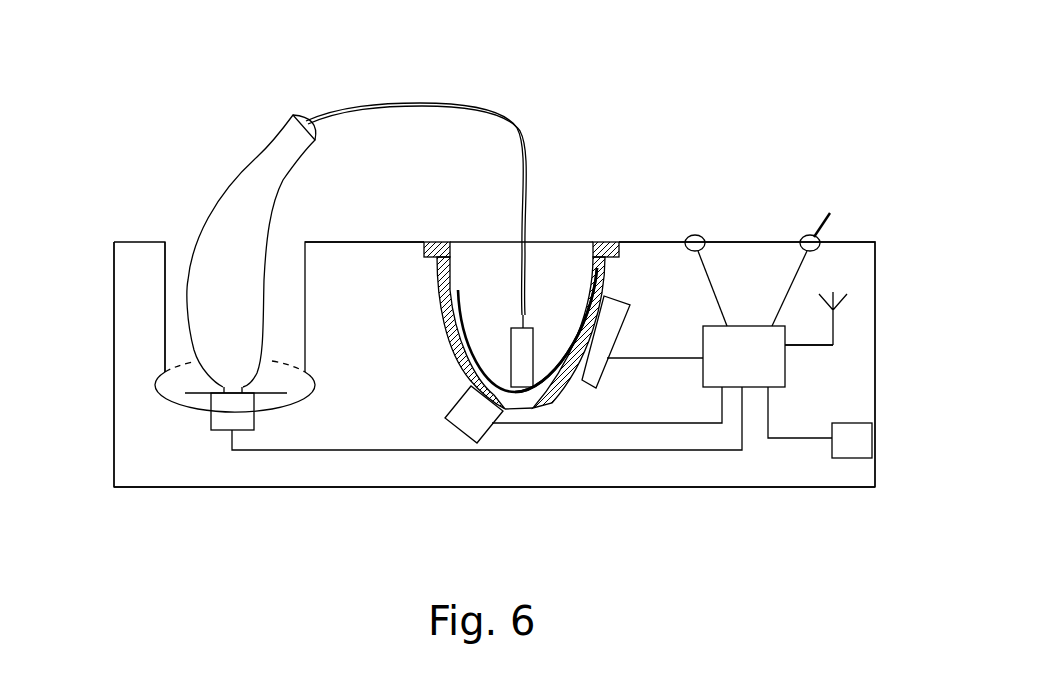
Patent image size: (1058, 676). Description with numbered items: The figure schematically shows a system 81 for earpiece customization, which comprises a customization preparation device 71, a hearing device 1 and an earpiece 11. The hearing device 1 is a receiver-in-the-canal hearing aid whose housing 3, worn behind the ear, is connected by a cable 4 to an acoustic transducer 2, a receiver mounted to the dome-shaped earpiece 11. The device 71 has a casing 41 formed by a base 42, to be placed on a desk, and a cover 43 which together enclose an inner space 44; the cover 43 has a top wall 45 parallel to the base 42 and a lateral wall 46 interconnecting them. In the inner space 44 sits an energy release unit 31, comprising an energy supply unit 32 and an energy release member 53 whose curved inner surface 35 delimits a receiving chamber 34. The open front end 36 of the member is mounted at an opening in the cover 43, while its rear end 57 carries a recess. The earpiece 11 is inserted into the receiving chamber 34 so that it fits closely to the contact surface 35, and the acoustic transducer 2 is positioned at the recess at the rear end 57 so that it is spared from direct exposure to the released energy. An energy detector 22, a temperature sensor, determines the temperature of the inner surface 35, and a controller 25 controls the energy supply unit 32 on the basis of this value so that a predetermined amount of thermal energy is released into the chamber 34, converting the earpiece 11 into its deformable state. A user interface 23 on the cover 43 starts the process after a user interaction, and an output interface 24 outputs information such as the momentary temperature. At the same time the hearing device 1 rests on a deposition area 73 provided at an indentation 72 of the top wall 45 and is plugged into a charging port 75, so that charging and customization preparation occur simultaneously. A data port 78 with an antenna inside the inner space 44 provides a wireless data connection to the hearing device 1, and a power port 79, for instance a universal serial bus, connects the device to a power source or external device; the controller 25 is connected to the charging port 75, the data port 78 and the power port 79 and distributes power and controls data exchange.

The hearing device 1 is at (437, 72).
The acoustic transducer 2 is at (520, 387).
The housing 3 is at (230, 167).
The cable 4 is at (487, 120).
The earpiece 11 is at (588, 312).
The energy detector 22 is at (463, 425).
The user interface 23 is at (812, 235).
The output interface 24 is at (697, 235).
The controller 25 is at (770, 373).
The energy release unit 31 is at (448, 318).
The energy supply unit 32 is at (604, 312).
The receiving chamber 34 is at (540, 255).
The inner surface 35 is at (452, 273).
The front end 36 is at (438, 242).
The casing 41 is at (876, 330).
The base 42 is at (752, 488).
The cover 43 is at (862, 242).
The inner space 44 is at (860, 262).
The top wall 45 is at (401, 242).
The lateral wall 46 is at (114, 421).
The energy release member 53 is at (453, 353).
The rear end 57 is at (537, 410).
The customization preparation device 71 is at (106, 225).
The indentation 72 is at (165, 279).
The deposition area 73 is at (193, 395).
The charging port 75 is at (230, 420).
The data port 78 is at (836, 320).
The power port 79 is at (860, 440).
The system 81 is at (106, 135).